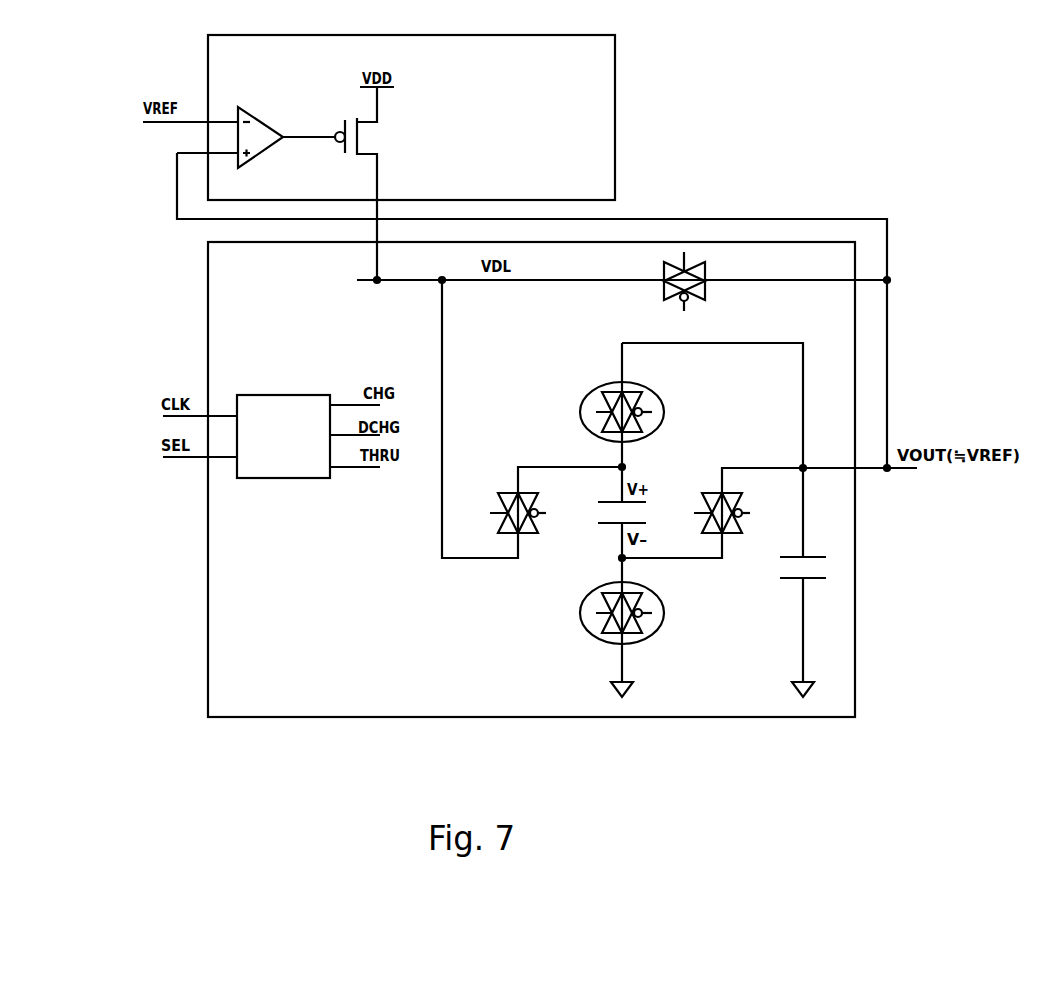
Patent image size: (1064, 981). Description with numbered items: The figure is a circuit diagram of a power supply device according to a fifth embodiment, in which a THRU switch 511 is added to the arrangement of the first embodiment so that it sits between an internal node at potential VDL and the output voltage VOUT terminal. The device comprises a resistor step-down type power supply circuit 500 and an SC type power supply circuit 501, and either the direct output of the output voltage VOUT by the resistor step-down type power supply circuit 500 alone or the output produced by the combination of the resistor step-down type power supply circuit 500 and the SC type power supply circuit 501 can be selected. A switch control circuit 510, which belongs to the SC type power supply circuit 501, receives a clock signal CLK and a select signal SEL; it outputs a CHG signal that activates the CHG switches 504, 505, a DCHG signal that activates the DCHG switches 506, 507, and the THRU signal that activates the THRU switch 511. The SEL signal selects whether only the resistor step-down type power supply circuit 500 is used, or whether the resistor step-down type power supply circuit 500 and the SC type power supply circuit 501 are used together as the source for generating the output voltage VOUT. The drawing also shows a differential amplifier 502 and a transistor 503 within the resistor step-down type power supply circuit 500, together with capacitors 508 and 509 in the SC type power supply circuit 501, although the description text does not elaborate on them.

The resistor step-down type power supply circuit 500 is at (615, 47).
The SC type power supply circuit 501 is at (722, 241).
The differential amplifier 502 is at (245, 106).
The PMOS transistor 503 is at (380, 138).
The CHG switch 504 is at (503, 492).
The CHG switch 505 is at (710, 495).
The DCHG switch 506 is at (612, 386).
The DCHG switch 507 is at (580, 627).
The capacitor 508 is at (596, 517).
The capacitor 509 is at (826, 567).
The switch control circuit 510 is at (283, 478).
The THRU switch 511 is at (663, 290).